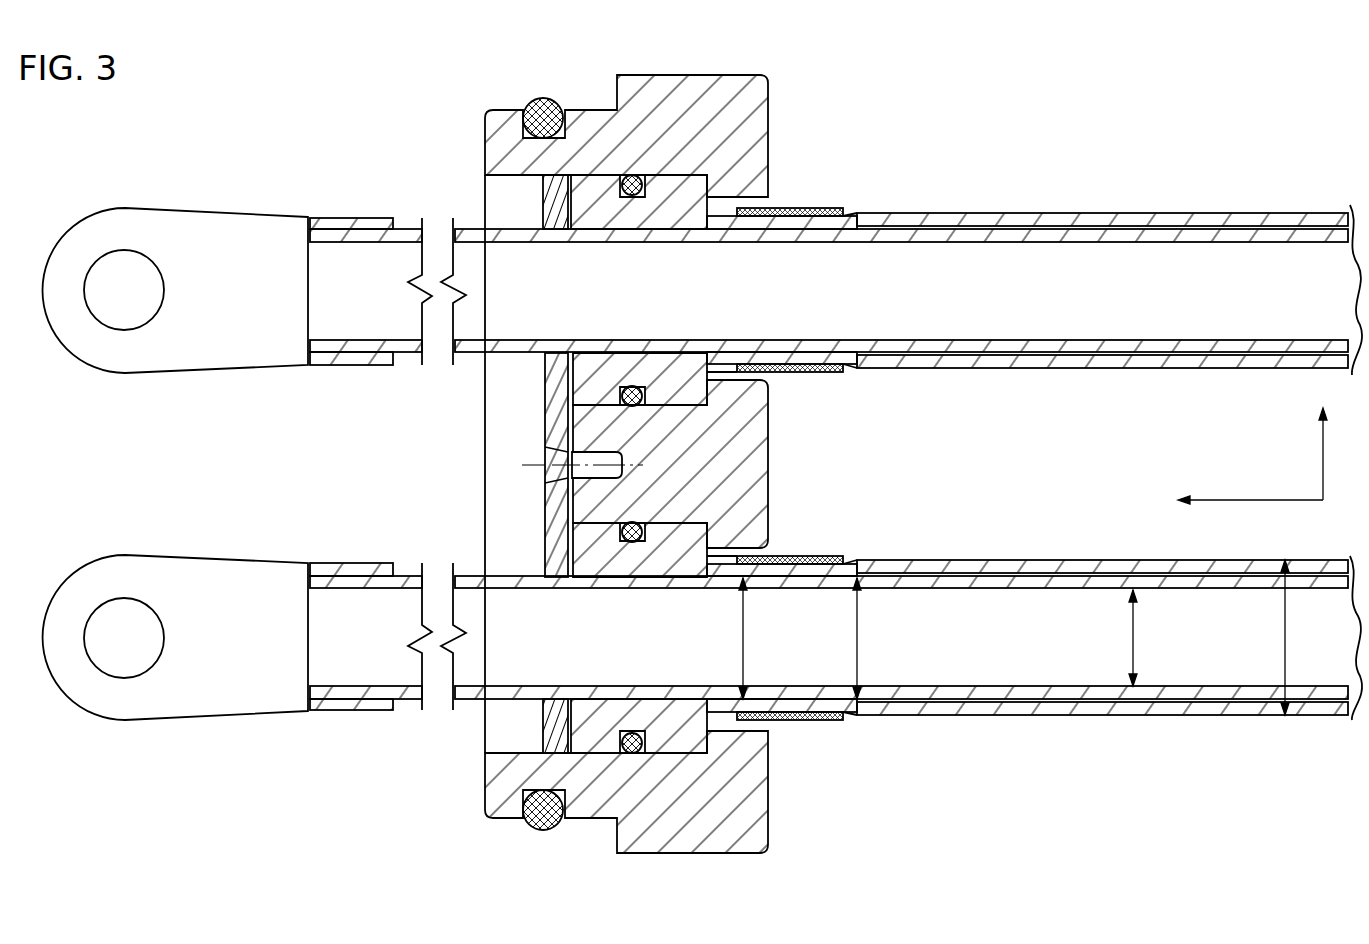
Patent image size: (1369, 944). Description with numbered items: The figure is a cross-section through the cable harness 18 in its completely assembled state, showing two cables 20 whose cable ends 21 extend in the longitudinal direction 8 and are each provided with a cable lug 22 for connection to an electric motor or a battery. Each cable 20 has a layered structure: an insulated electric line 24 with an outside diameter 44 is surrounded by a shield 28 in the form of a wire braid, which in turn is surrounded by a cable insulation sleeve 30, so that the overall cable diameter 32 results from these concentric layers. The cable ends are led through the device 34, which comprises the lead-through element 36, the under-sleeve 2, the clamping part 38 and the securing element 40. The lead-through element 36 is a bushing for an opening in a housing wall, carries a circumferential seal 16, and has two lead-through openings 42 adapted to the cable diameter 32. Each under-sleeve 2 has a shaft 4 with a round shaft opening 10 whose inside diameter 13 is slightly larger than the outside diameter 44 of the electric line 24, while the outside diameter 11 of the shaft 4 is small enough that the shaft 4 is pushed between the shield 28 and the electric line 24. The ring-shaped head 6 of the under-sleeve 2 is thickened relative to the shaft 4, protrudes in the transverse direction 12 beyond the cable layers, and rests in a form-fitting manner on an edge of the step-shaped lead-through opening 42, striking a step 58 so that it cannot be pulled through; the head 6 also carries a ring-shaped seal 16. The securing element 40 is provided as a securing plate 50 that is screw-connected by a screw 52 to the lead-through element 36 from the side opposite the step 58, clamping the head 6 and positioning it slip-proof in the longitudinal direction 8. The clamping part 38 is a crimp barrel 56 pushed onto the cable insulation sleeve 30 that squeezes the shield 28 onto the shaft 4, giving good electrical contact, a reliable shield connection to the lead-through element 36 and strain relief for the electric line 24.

The under-sleeve 2 is at (806, 176).
The shaft 4 is at (793, 558).
The head 6 is at (590, 205).
The longitudinal direction 8 is at (1250, 516).
The shaft opening 10 is at (829, 416).
The outside diameter 11 is at (862, 640).
The transverse direction 12 is at (1323, 450).
The inside diameter 13 is at (741, 638).
The seal 16 is at (532, 100).
The cable harness 18 is at (306, 128).
The cable 20 is at (1109, 472).
The cable end 21 is at (411, 359).
The cable lug 22 is at (157, 360).
The electric line 24 is at (1092, 287).
The shield 28 is at (987, 213).
The cable insulation sleeve 30 is at (1115, 362).
The cable diameter 32 is at (1282, 637).
The device 34 is at (438, 813).
The lead-through element 36 is at (718, 95).
The clamping part 38 is at (824, 731).
The securing element 40 is at (527, 518).
The lead-through opening 42 is at (770, 556).
The outside diameter 44 is at (1130, 640).
The securing plate 50 is at (555, 375).
The screw 52 is at (553, 477).
The crimp barrel 56 is at (790, 374).
The step 58 is at (703, 540).